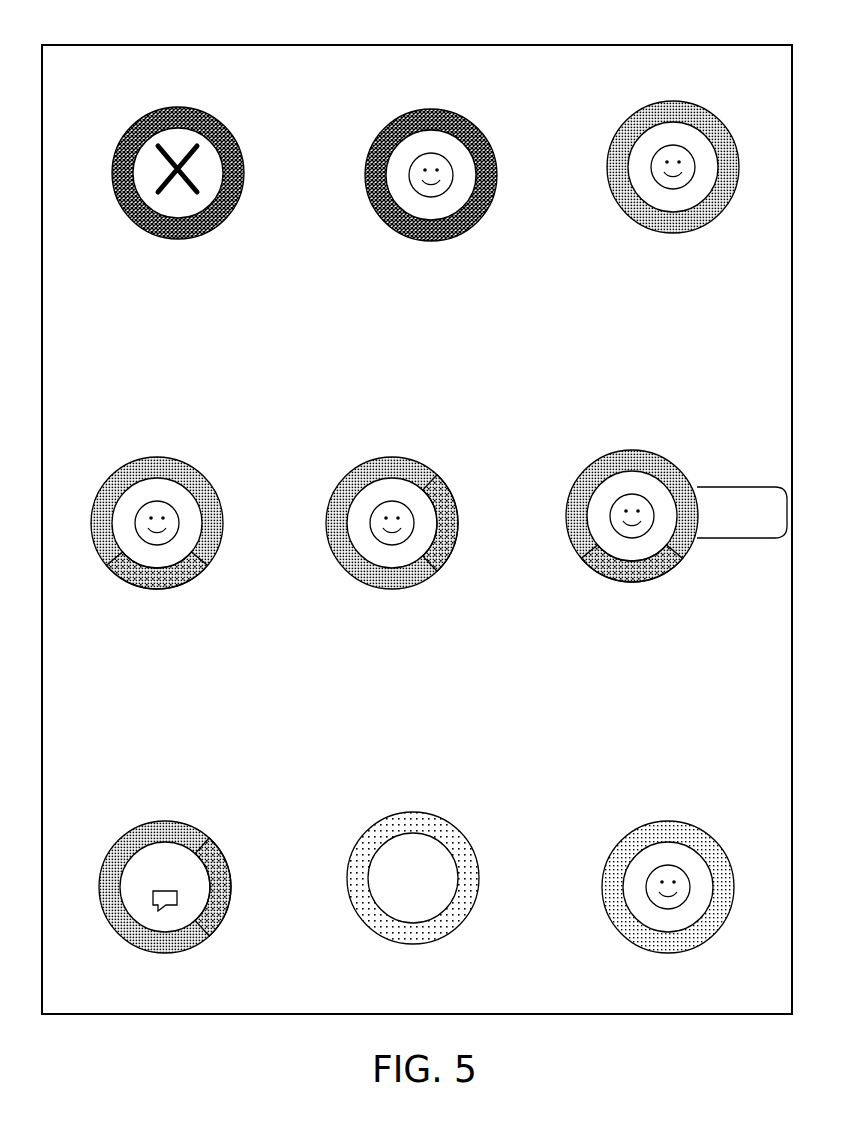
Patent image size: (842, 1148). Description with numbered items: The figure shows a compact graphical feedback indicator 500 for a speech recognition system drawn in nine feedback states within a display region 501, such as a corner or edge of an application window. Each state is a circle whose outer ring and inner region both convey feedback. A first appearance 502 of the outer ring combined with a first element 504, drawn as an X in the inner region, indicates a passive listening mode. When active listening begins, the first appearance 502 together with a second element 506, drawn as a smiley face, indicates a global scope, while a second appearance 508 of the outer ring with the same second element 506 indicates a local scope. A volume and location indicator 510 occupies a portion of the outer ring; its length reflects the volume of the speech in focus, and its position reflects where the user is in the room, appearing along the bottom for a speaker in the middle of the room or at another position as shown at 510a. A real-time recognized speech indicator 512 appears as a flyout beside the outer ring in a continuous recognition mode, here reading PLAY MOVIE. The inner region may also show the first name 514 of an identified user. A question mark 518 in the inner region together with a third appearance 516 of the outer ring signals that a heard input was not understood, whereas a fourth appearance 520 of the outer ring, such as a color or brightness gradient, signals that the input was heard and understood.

The graphical feedback indicator 500 is at (422, 514).
The display area 501 is at (86, 45).
The first appearance of the outer ring 502 is at (188, 108).
The first element 504 is at (150, 180).
The second element 506 is at (398, 180).
The second appearance of the outer ring 508 is at (680, 102).
The volume and location indicator 510 is at (156, 592).
The location of the volume and location indicator 510a is at (460, 524).
The real-time recognized speech indicator 512 is at (714, 487).
The first name 514 is at (130, 885).
The third appearance of the outer ring 516 is at (443, 818).
The question mark 518 is at (387, 888).
The fourth appearance of the outer ring 520 is at (698, 826).